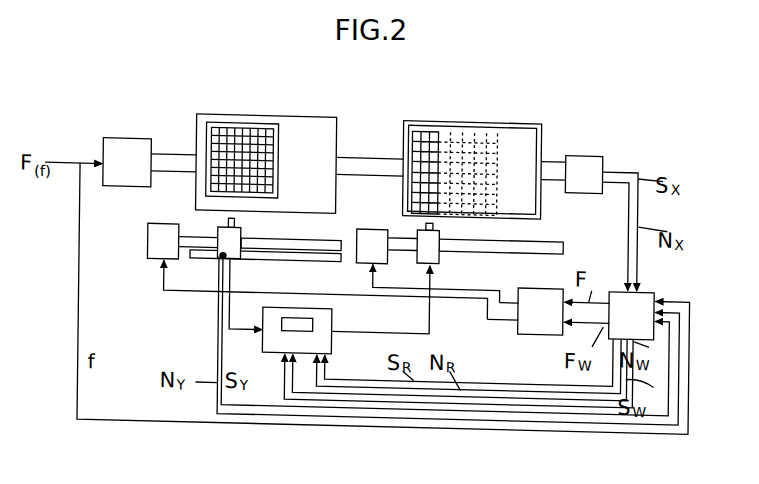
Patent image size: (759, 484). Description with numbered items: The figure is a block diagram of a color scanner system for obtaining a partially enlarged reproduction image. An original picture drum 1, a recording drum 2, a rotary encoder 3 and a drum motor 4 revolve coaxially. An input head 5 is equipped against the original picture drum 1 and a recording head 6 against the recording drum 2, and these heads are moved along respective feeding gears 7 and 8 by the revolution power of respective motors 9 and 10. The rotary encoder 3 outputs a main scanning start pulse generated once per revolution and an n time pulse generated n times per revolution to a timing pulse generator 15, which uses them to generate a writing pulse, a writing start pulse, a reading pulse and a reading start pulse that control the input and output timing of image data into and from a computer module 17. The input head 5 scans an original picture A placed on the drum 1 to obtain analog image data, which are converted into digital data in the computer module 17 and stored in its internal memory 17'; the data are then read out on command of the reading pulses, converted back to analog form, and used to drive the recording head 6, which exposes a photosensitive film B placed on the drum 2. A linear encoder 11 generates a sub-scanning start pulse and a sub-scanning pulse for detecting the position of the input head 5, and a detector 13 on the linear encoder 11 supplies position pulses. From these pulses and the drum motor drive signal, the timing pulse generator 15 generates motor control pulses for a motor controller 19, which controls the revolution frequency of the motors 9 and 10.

The original picture drum 1 is at (324, 119).
The recording drum 2 is at (533, 112).
The rotary encoder 3 is at (585, 142).
The drum motor 4 is at (126, 135).
The input head 5 is at (229, 231).
The recording head 6 is at (436, 245).
The feeding gear 7 is at (331, 237).
The feeding gear 8 is at (555, 229).
The motor 9 is at (161, 246).
The motor 10 is at (366, 251).
The linear encoder 11 is at (293, 253).
The detector 13 is at (225, 251).
The timing pulse generator 15 is at (644, 284).
The computer module 17 is at (320, 335).
The internal memory 17' is at (334, 319).
The motor controller 19 is at (547, 316).
The original picture A is at (230, 121).
The photosensitive film B is at (442, 119).